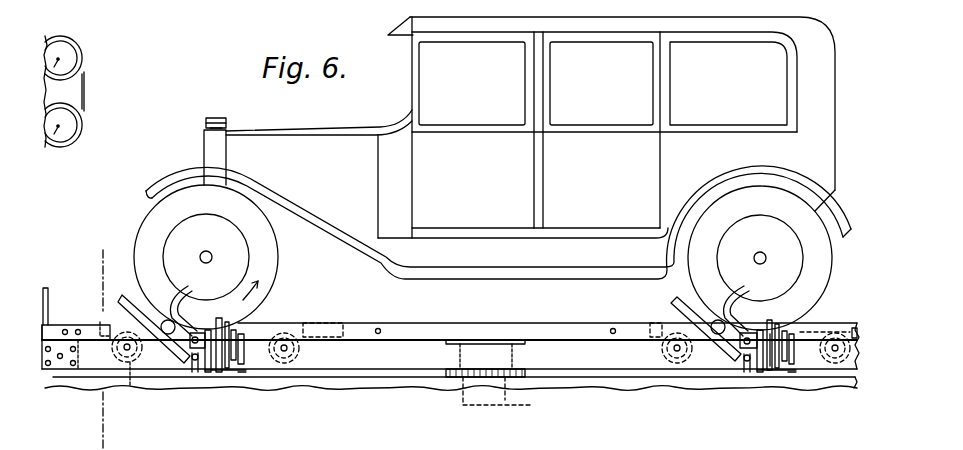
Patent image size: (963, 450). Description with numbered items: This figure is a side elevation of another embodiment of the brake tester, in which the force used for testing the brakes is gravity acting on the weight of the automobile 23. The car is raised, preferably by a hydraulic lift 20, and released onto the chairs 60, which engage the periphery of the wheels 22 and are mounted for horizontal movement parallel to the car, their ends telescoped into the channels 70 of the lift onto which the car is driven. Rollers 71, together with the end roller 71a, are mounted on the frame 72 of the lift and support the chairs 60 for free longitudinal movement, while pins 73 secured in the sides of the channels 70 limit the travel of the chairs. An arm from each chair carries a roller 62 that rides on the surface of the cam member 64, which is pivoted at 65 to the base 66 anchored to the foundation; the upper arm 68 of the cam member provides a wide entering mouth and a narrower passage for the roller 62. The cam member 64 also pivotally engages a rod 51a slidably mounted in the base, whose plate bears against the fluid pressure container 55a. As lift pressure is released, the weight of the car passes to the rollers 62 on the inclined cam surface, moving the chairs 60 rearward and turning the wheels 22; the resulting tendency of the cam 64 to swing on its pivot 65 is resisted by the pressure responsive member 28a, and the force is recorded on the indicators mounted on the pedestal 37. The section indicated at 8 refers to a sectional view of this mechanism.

The section line 8- 8 is at (95, 265).
The hydraulic lift 20 is at (504, 395).
The wheels 22 is at (150, 213).
The automobile 23 is at (498, 148).
The pressure responsive member 28a is at (232, 362).
The pedestal 37 is at (85, 85).
The rod 51a is at (193, 343).
The fluid pressure container 55a is at (772, 362).
The chairs 60 is at (345, 322).
The roller 62 is at (182, 318).
The cam member 64 is at (121, 295).
The pivot 65 is at (195, 362).
The base 66 is at (240, 372).
The upper arm 68 is at (188, 287).
The channels 70 is at (458, 324).
The rollers 71 is at (132, 386).
The end roller 71a is at (837, 380).
The frame 72 is at (450, 356).
The pins 73 is at (78, 330).